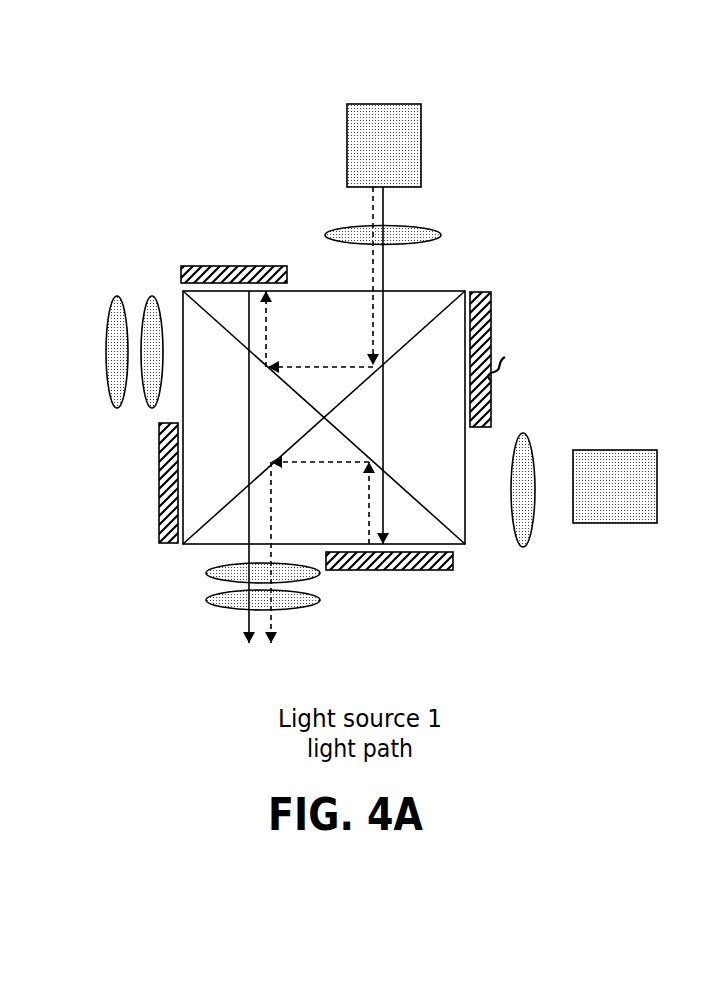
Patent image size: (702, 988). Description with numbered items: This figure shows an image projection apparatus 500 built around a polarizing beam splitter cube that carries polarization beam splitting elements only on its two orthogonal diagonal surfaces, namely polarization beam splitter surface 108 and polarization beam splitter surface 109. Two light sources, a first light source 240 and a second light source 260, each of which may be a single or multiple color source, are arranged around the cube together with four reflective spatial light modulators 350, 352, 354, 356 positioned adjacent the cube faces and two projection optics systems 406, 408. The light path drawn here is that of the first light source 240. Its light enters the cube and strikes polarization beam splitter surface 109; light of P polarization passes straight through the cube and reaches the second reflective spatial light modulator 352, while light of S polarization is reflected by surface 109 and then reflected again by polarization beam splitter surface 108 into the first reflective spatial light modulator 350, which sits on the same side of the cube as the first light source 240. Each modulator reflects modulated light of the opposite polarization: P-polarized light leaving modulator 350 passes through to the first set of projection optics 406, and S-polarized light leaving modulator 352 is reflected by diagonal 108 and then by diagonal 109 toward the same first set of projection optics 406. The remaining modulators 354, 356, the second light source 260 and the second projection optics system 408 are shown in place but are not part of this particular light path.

The image projection apparatus 500 is at (624, 118).
The polarization beam splitter surface 108 is at (440, 523).
The polarization beam splitter surface 109 is at (440, 310).
The first light source 240 is at (383, 130).
The second light source 260 is at (612, 455).
The first reflective spatial light modulator 350 is at (283, 268).
The second reflective spatial light modulator 352 is at (352, 560).
The reflective spatial light modulator 354 is at (491, 300).
The reflective spatial light modulator 356 is at (167, 513).
The first set of projection optics 406 is at (211, 620).
The second projection optics system 408 is at (130, 276).